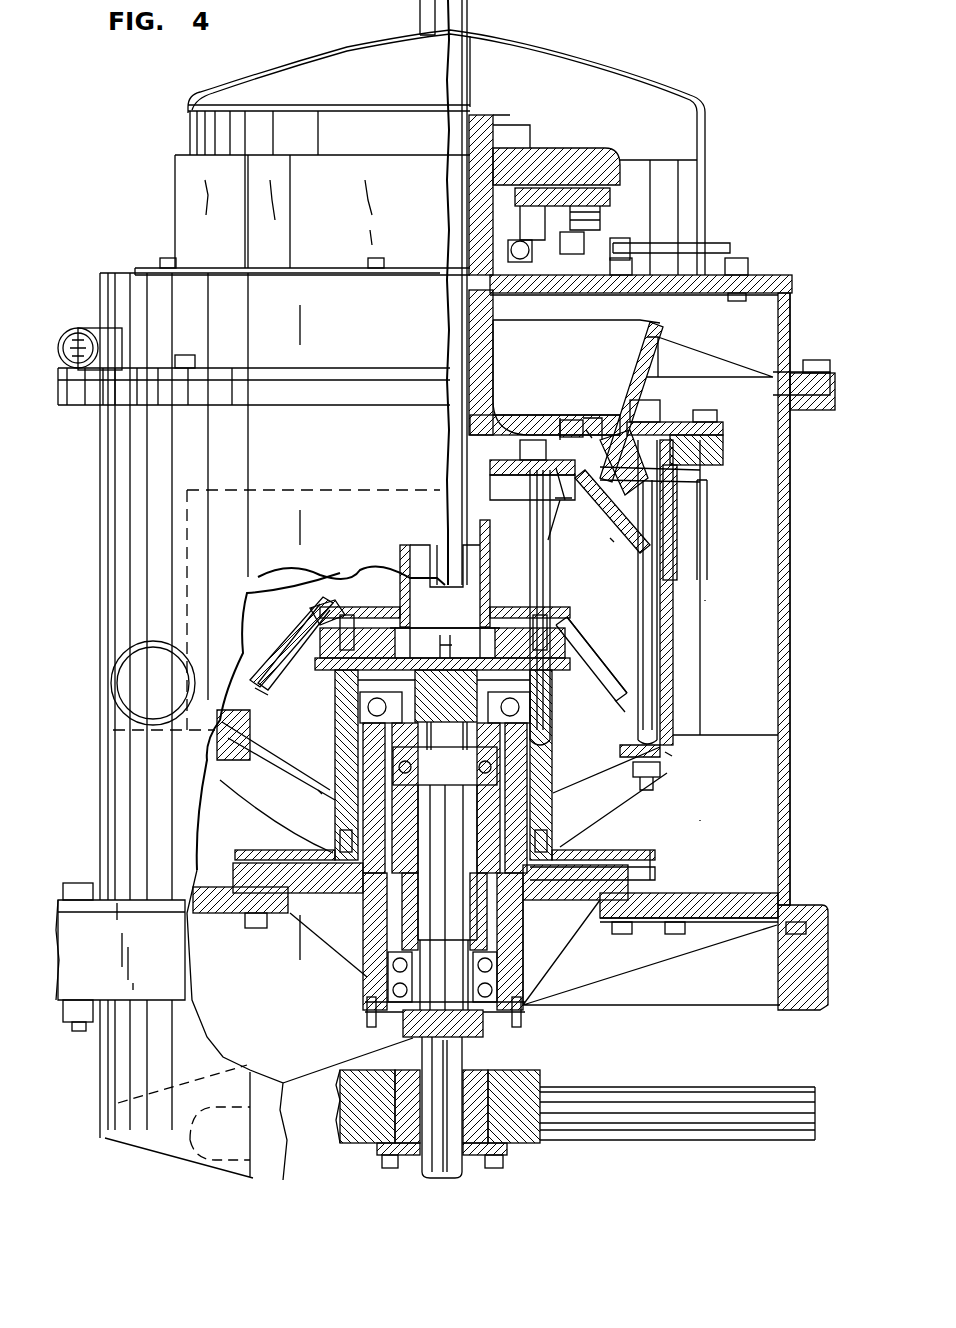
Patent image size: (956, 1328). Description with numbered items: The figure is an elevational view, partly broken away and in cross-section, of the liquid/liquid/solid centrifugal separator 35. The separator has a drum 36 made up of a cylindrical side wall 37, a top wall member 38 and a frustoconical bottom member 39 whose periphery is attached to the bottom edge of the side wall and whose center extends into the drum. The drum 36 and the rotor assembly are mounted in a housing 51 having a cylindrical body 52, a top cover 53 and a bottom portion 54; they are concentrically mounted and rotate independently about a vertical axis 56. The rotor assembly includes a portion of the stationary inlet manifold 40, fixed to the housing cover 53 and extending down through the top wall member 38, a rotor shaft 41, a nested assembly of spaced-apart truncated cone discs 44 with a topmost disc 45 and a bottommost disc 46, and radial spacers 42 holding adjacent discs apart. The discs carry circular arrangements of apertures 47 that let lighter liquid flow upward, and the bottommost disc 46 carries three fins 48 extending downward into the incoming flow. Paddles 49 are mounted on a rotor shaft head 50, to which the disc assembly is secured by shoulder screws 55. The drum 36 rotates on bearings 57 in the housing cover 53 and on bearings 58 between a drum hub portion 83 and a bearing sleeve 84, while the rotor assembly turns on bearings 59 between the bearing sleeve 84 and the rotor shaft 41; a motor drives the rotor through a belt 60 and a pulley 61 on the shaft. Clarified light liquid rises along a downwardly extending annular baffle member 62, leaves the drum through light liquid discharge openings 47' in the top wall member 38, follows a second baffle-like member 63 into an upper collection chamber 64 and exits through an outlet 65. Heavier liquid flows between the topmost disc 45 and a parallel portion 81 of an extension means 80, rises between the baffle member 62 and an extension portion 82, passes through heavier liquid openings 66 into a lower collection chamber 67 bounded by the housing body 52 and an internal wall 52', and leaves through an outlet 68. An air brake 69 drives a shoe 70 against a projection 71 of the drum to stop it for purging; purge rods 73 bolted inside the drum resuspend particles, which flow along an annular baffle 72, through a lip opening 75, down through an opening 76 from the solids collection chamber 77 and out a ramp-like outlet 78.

The separator 35 is at (715, 82).
The top cover 53 is at (708, 142).
The projection 71 is at (597, 160).
The shoe 70 is at (628, 195).
The air brake 69 is at (652, 222).
The bearings 57 is at (524, 294).
The upper collection chamber 64 is at (750, 338).
The inlet manifold 40 is at (446, 333).
The outlet 65 is at (84, 328).
The second baffle-like member 63 is at (640, 366).
The heavier liquid discharge openings 66 is at (606, 425).
The top wall member 38 is at (520, 430).
The topmost disc 45 is at (535, 460).
The light liquid discharge openings 47' is at (575, 412).
The annular baffle member 62 is at (604, 452).
The extension portion 82 is at (700, 473).
The extension means 80 is at (690, 485).
The parallel portion 81 is at (640, 524).
The cylindrical body 52 is at (810, 599).
The cylindrical side wall 37 is at (674, 658).
The internal wall 52' is at (725, 587).
The lower collection chamber 67 is at (754, 616).
The shoulder screws 55 is at (532, 516).
The apertures 47 is at (422, 579).
The radial spacers 42 is at (612, 540).
The truncated cone discs 44 is at (603, 645).
The rotor shaft 41 is at (490, 582).
The rotor shaft head 50 is at (381, 628).
The paddles 49 is at (470, 650).
The bearings 58 is at (360, 720).
The bearings 59 is at (345, 992).
The bottommost disc 46 is at (265, 657).
The fins 48 is at (435, 718).
The frustoconical bottom member 39 is at (240, 752).
The annular baffle 72 is at (630, 780).
The lip opening 75 is at (318, 792).
The purge rods 73 is at (650, 790).
The drum 36 is at (673, 765).
The solids collection chamber 77 is at (736, 836).
The drum hub portion 83 is at (345, 823).
The bearing sleeve 84 is at (368, 921).
The opening 76 is at (718, 890).
The bottom portion 54 is at (790, 880).
The ramp-like outlet 78 is at (108, 1100).
The housing 51 is at (120, 522).
The outlet 68 is at (146, 641).
The vertical axis 56 is at (422, 546).
The pulley 61 is at (546, 1074).
The belt 60 is at (704, 1100).